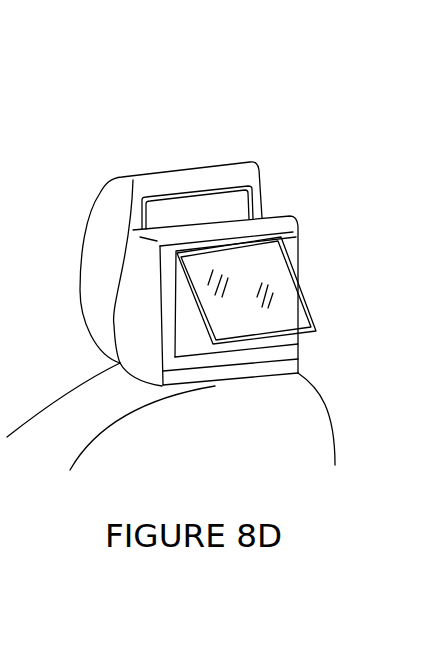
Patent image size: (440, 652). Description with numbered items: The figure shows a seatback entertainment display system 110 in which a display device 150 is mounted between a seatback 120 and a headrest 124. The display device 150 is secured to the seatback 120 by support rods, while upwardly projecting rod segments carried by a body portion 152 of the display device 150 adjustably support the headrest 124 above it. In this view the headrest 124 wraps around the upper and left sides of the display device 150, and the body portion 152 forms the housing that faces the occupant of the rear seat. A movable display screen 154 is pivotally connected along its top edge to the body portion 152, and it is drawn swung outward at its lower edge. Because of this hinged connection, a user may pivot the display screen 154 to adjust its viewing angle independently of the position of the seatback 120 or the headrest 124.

The seatback entertainment display system 110 is at (256, 127).
The seatback 120 is at (317, 410).
The headrest 124 is at (100, 240).
The display device 150 is at (134, 326).
The body portion 152 is at (263, 220).
The display screen 154 is at (293, 310).